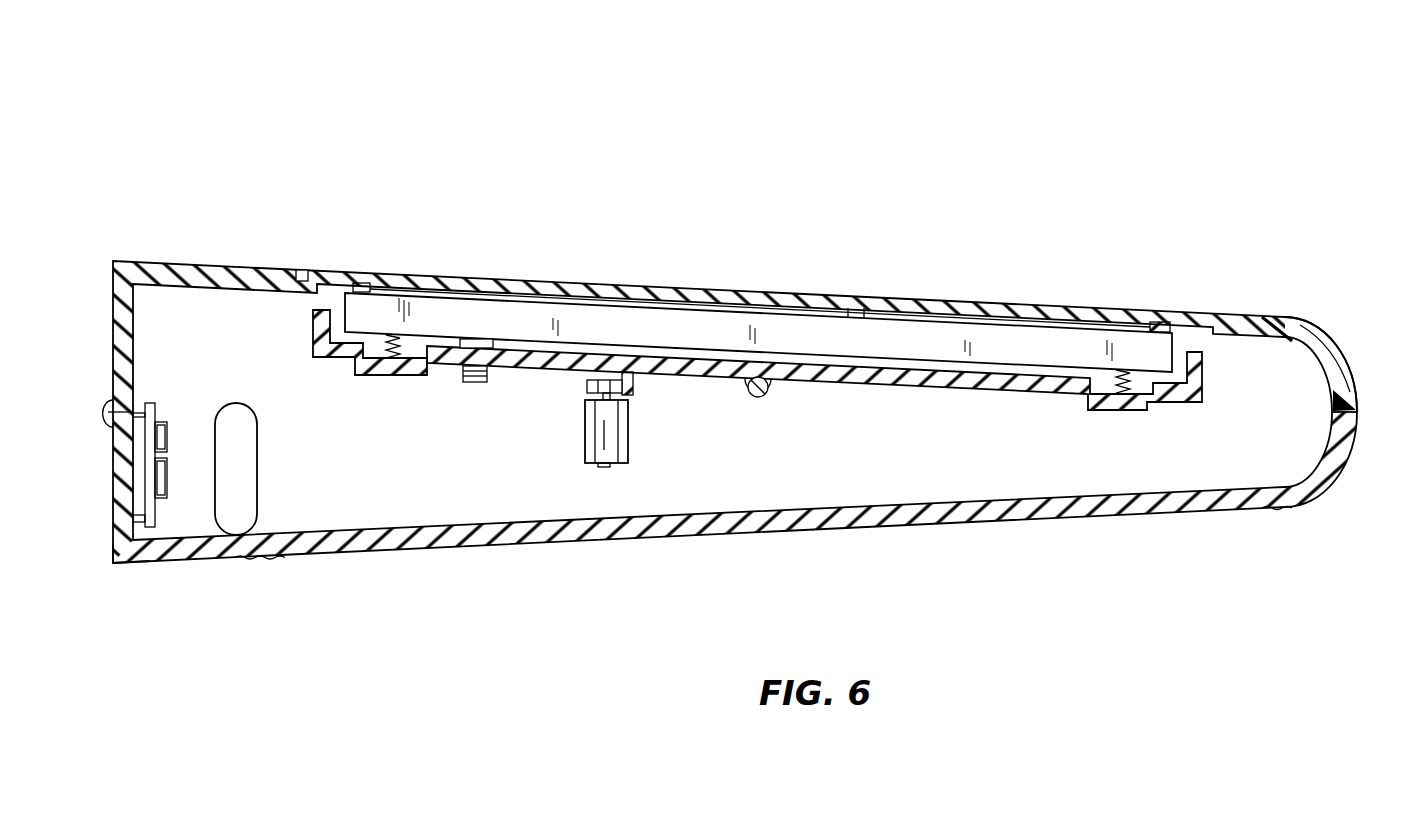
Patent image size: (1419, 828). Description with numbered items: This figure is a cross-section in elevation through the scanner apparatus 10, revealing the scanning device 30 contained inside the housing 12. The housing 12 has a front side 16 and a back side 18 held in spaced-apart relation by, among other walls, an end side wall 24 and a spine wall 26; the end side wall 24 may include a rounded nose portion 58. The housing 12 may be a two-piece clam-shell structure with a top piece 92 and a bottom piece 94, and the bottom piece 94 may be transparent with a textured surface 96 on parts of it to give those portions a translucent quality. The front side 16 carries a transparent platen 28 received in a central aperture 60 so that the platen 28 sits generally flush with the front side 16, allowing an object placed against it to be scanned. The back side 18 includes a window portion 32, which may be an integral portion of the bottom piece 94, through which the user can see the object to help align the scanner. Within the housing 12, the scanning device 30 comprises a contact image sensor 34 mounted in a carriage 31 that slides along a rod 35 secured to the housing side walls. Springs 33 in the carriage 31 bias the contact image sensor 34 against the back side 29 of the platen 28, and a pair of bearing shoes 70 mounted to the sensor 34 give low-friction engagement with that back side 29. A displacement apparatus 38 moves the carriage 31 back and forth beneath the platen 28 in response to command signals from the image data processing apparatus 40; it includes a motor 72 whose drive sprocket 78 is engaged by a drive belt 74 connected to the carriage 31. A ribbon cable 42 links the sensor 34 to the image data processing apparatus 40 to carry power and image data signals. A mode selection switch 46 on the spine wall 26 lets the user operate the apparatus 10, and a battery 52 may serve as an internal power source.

The scanner apparatus 10 is at (247, 111).
The housing 12 is at (123, 247).
The front side 16 is at (1240, 308).
The back side 18 is at (145, 565).
The end side wall 24 is at (1355, 385).
The spine wall 26 is at (118, 326).
The transparent platen 28 is at (386, 270).
The back side of platen 29 is at (868, 302).
The scanning device 30 is at (757, 400).
The carriage 31 is at (1015, 395).
The window portion 32 is at (548, 540).
The springs 33 is at (385, 358).
The contact image sensor 34 is at (1032, 306).
The rod 35 is at (765, 392).
The displacement apparatus 38 is at (608, 435).
The image data processing apparatus 40 is at (173, 430).
The ribbon cable 42 is at (474, 396).
The mode selection switch 46 is at (108, 412).
The battery 52 is at (258, 460).
The rounded nose portion 58 is at (1358, 410).
The central aperture 60 is at (305, 272).
The bearing shoes 70 is at (344, 284).
The motor 72 is at (587, 445).
The drive belt 74 is at (640, 385).
The drive sprocket 78 is at (590, 386).
The top piece 92 is at (1335, 348).
The bottom piece 94 is at (1338, 483).
The textured surface 96 is at (258, 560).